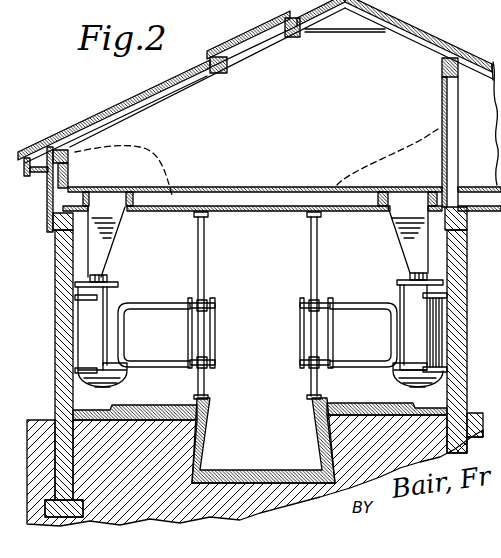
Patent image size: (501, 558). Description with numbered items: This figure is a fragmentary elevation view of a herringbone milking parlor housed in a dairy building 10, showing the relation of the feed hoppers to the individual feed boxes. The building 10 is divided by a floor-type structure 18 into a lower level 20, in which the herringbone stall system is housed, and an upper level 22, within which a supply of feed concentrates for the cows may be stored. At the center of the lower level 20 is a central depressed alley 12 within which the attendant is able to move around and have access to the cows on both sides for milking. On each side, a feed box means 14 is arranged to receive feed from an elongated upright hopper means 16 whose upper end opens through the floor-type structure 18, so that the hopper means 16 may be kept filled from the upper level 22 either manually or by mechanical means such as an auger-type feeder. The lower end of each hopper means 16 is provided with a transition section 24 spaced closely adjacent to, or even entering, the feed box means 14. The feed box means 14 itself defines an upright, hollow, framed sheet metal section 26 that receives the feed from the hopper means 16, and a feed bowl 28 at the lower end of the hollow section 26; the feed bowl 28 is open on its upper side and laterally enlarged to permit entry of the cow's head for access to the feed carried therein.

The dairy building 10 is at (56, 368).
The central depressed alley 12 is at (252, 467).
The feed box means 14 is at (88, 331).
The hopper means 16 is at (99, 236).
The floor-type structure 18 is at (173, 198).
The lower level 20 is at (170, 277).
The upper level 22 is at (343, 101).
The transition section 24 is at (90, 279).
The hollow section 26 is at (88, 312).
The feed bowl 28 is at (116, 381).